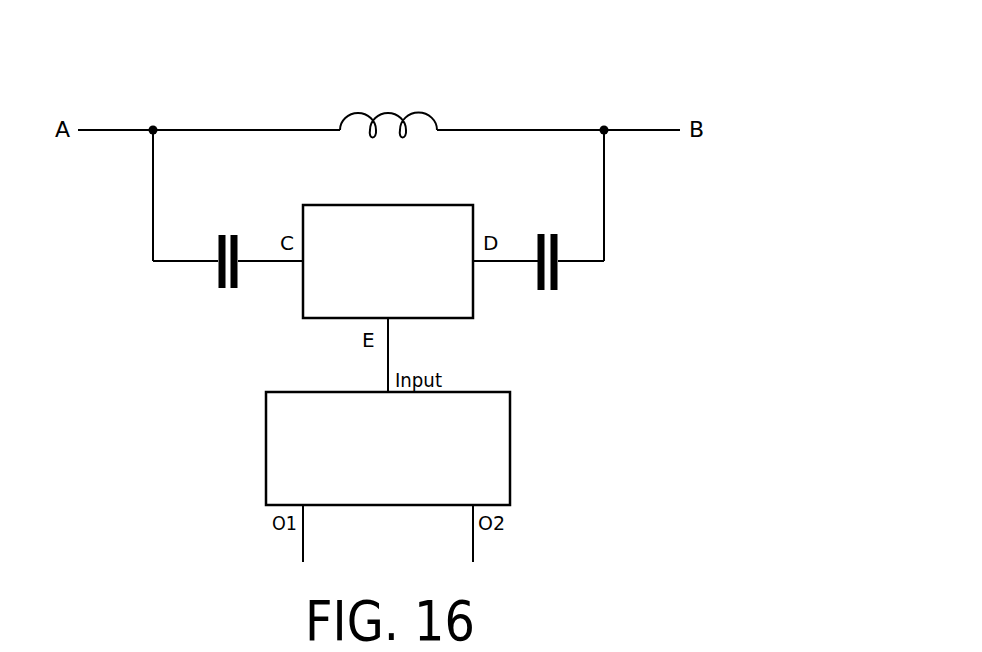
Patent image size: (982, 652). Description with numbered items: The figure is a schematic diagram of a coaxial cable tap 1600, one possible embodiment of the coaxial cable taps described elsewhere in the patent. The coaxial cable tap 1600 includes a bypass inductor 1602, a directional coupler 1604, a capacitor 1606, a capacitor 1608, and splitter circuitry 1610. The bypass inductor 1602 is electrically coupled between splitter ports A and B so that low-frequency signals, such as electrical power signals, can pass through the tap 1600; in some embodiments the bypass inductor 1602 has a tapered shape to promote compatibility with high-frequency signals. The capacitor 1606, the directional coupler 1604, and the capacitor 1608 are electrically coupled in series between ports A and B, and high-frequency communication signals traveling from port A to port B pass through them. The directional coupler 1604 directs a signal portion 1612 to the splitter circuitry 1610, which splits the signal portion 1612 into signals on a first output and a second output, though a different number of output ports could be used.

The coaxial cable tap 1600 is at (749, 67).
The bypass inductor 1602 is at (419, 85).
The directional coupler 1604 is at (410, 302).
The capacitor 1606 is at (238, 219).
The capacitor 1608 is at (560, 216).
The splitter circuitry 1610 is at (412, 490).
The signal portion 1612 is at (402, 354).